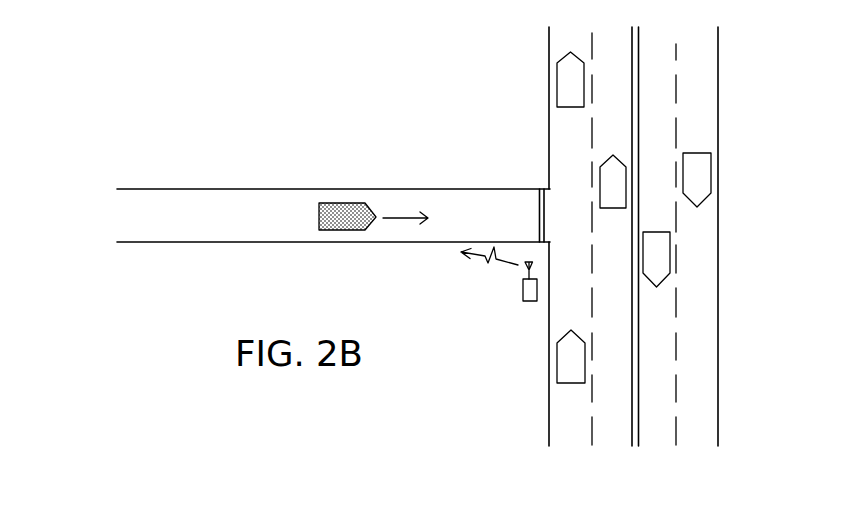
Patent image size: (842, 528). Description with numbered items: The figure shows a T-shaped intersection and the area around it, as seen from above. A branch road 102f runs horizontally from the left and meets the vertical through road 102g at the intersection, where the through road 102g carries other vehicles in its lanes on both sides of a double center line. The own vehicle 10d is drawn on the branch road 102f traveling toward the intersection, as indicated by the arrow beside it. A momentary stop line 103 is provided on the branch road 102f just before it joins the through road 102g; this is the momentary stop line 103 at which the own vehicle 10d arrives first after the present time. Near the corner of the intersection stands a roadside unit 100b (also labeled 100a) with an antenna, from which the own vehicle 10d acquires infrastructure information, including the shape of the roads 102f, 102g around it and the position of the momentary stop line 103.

The road 102f is at (105, 191).
The road 102g is at (718, 457).
The momentary stop line 103 is at (537, 208).
The own vehicle 10d is at (340, 210).
The roadside communication device 100b is at (504, 307).
The roadside communication device 100a is at (525, 302).